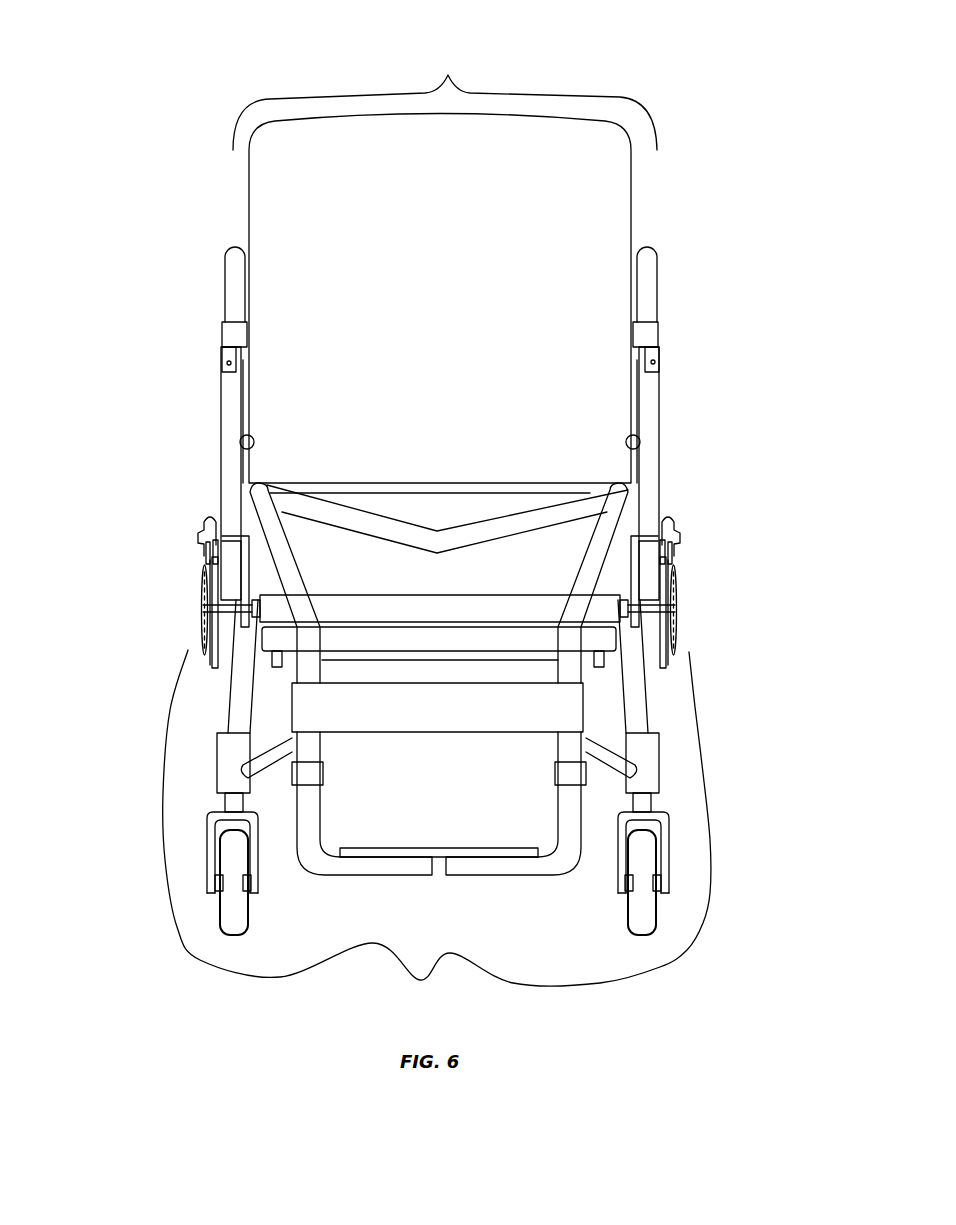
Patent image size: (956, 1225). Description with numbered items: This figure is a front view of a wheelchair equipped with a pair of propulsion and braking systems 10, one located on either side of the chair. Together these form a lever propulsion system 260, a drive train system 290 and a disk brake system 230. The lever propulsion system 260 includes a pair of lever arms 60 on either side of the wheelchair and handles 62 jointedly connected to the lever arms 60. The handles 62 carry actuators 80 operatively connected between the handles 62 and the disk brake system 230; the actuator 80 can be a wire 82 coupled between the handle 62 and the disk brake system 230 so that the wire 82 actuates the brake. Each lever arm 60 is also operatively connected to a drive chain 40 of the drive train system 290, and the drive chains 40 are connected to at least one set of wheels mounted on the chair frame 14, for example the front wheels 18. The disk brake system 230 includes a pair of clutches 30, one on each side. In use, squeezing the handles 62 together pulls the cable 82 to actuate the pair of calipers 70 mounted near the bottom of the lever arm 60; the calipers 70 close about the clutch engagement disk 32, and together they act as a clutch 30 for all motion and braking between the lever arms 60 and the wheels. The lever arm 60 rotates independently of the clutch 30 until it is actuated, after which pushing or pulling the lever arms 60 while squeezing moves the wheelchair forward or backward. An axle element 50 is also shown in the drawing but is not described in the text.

The propulsion and braking system 10 is at (128, 446).
The chair frame 14 is at (632, 710).
The front wheels 18 is at (232, 918).
The clutch 30 is at (176, 545).
The clutch engagement disk 32 is at (213, 665).
The drive chain 40 is at (202, 578).
The axle 50 is at (210, 608).
The lever arm 60 is at (222, 390).
The handle 62 is at (232, 270).
The caliper 70 is at (184, 514).
The actuator 80 is at (232, 330).
The wire 82 is at (233, 352).
The disk brake system 230 is at (437, 827).
The lever propulsion system 260 is at (445, 269).
The drive train system 290 is at (170, 642).